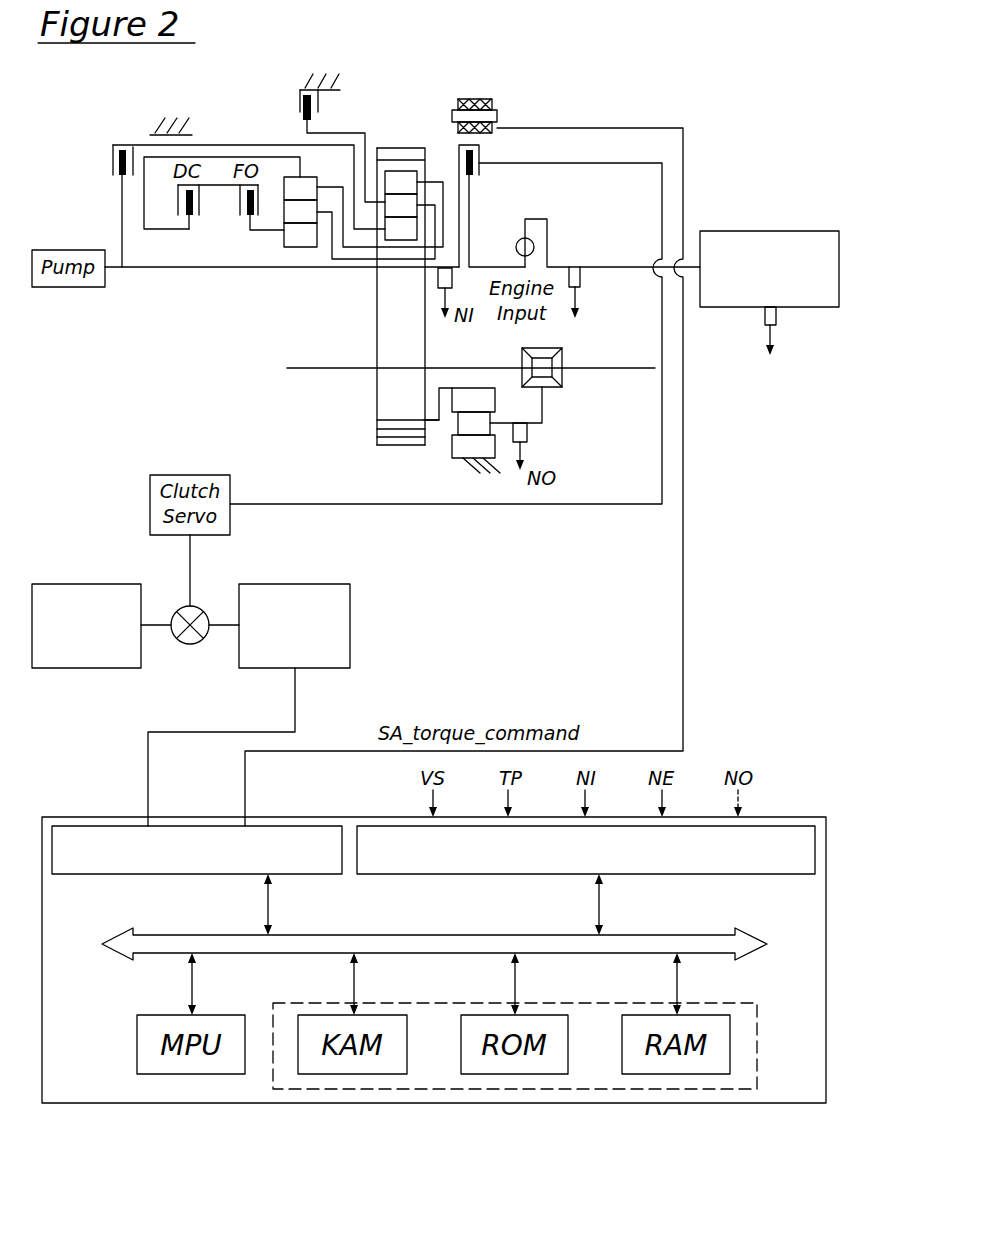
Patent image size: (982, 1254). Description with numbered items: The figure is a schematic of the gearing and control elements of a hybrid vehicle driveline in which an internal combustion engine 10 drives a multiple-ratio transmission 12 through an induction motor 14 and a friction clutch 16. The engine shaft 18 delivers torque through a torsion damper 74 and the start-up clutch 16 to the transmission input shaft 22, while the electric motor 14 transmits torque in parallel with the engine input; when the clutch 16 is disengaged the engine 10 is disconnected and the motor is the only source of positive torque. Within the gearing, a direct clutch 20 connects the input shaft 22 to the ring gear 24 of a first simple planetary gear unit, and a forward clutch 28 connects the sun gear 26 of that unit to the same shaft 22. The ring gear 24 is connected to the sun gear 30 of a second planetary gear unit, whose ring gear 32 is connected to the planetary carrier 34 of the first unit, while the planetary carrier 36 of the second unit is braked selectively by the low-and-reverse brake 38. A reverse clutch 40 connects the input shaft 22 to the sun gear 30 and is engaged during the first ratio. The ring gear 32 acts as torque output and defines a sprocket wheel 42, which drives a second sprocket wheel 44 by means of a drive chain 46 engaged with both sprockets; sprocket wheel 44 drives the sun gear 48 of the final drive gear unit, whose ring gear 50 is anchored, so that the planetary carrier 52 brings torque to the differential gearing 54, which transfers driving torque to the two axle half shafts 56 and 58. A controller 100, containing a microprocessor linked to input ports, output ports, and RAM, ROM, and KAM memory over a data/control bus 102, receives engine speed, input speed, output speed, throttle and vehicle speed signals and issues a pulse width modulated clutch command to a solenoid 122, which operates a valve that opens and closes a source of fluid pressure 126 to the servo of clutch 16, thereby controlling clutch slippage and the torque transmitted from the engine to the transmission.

The internal combustion engine 10 is at (772, 231).
The multiple-ratio vehicle transmission 12 is at (204, 335).
The induction motor 14 is at (474, 99).
The friction clutch 16 is at (486, 159).
The engine shaft 18 is at (560, 266).
The direct clutch 20 is at (184, 208).
The transmission input shaft 22 is at (434, 259).
The ring gear 24 is at (293, 176).
The sun gear 26 is at (303, 247).
The forward clutch 28 is at (244, 200).
The sun gear 30 is at (417, 229).
The ring gear 32 is at (418, 181).
The planetary carrier 34 is at (284, 212).
The planetary carrier 36 is at (366, 195).
The low-and-reverse brake 38 is at (314, 106).
The reverse clutch 40 is at (118, 160).
The sprocket wheel 42 is at (410, 162).
The sprocket wheel 44 is at (385, 442).
The drive chain 46 is at (388, 290).
The sun gear 48 is at (475, 388).
The ring gear 50 is at (452, 447).
The planetary carrier 52 is at (543, 406).
The differential gearing 54 is at (570, 344).
The axle half shaft 56 is at (607, 369).
The axle half shaft 58 is at (328, 369).
The torsion damper 74 is at (522, 238).
The controller 100 is at (88, 817).
The data/control bus 102 is at (428, 935).
The solenoid 122 is at (352, 626).
The source of fluid pressure 126 is at (88, 584).